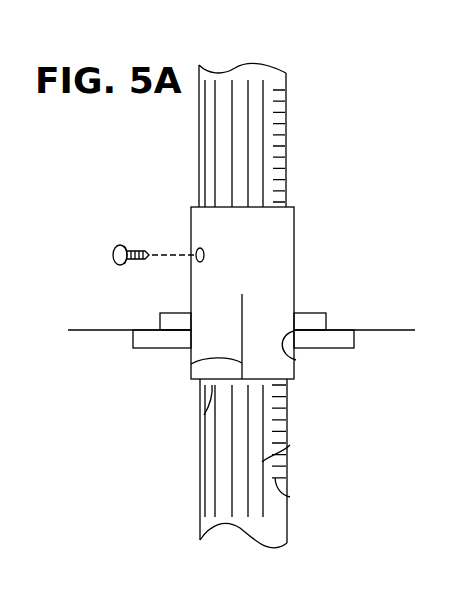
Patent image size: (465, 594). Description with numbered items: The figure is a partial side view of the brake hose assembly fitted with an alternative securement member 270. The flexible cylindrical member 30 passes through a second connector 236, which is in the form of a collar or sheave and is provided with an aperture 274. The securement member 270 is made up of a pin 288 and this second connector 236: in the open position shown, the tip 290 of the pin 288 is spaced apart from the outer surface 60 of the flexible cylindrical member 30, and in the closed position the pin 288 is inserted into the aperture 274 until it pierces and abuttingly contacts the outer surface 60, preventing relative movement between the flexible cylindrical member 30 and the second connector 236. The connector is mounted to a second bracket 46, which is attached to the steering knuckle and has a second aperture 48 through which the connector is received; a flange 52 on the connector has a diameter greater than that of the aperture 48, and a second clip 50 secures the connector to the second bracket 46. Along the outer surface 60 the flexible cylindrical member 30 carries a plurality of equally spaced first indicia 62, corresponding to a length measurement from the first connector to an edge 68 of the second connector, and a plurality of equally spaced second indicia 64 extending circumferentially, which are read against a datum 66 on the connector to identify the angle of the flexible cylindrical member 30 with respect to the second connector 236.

The flexible cylindrical member 30 is at (252, 62).
The second connector 236 is at (113, 303).
The aperture 274 is at (197, 250).
The alternative securement member 270 is at (70, 251).
The pin 288 is at (133, 249).
The tip 290 is at (150, 258).
The flange 52 is at (326, 323).
The second bracket 46 is at (377, 330).
The second clip 50 is at (354, 340).
The second aperture 48 is at (296, 360).
The datum 66 is at (191, 364).
The outer surface 60 is at (278, 543).
The edge 68 is at (204, 415).
The second indicia 64 is at (290, 445).
The first indicia 62 is at (290, 497).